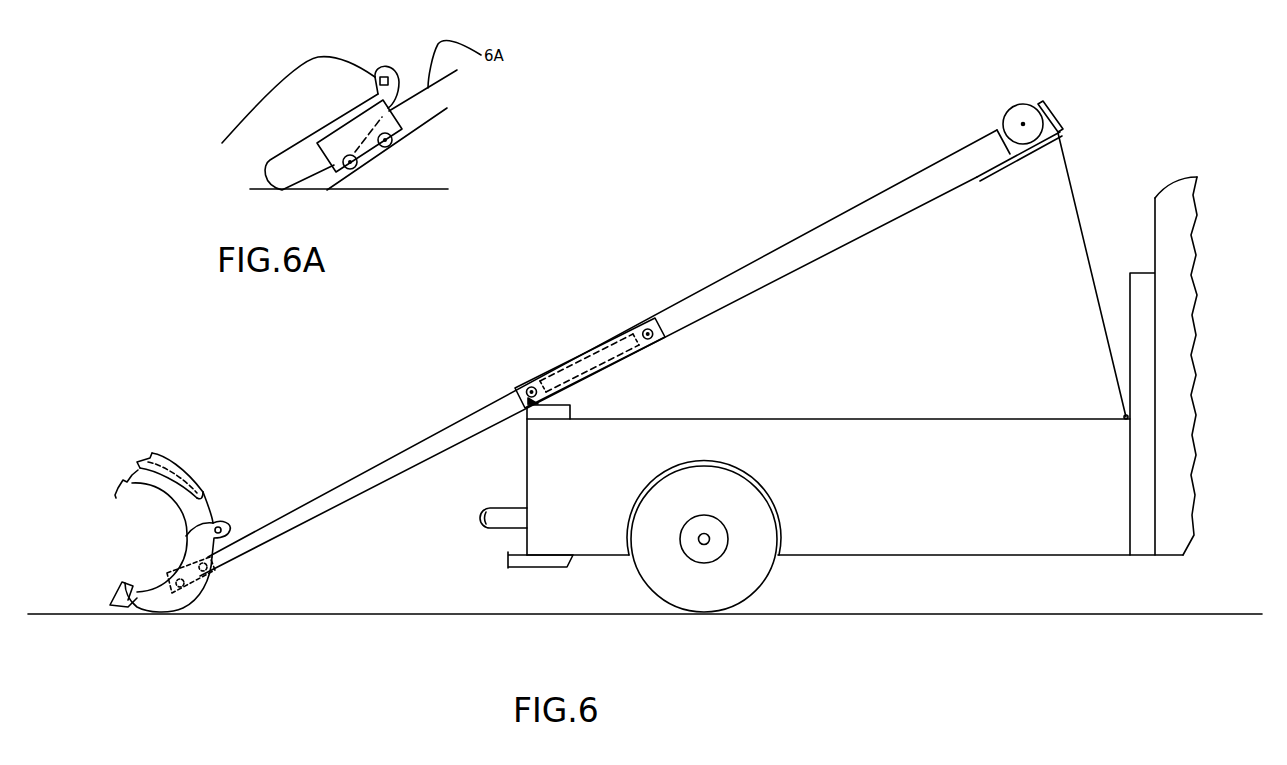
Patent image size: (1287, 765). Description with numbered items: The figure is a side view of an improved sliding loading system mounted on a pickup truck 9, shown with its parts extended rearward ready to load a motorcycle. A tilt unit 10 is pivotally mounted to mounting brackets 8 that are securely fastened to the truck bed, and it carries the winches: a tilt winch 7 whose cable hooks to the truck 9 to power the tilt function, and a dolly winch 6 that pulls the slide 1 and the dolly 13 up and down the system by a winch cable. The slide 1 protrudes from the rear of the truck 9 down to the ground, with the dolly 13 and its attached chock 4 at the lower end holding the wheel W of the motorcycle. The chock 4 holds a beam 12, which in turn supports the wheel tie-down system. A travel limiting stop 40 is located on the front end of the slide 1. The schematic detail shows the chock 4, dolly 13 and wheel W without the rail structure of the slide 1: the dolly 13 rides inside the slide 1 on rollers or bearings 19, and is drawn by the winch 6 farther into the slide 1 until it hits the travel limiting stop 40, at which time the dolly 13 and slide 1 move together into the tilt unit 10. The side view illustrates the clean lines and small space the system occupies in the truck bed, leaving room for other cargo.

In FIG. 6, the slide 1 is at (410, 447).
In FIG. 6A, the slide 1 is at (433, 113).
In FIG. 6, the chock 4 is at (225, 530).
In FIG. 6A, the chock 4 is at (277, 175).
In FIG. 6, the dolly winch 6 is at (1020, 141).
In FIG. 6, the tilt winch 7 is at (1027, 102).
In FIG. 6, the mounting brackets 8 is at (570, 409).
In FIG. 6, the truck 9 is at (960, 498).
In FIG. 6, the tilt unit 10 is at (748, 264).
In FIG. 6, the beam 12 is at (217, 527).
In FIG. 6A, the beam 12 is at (231, 120).
In FIG. 6, the dolly 13 is at (197, 583).
In FIG. 6A, the dolly 13 is at (385, 147).
In FIG. 6A, the rollers or bearings 19 is at (350, 170).
In FIG. 6, the travel limiting stop 40 is at (658, 320).
In FIG. 6, the motorcycle wheel W is at (178, 463).